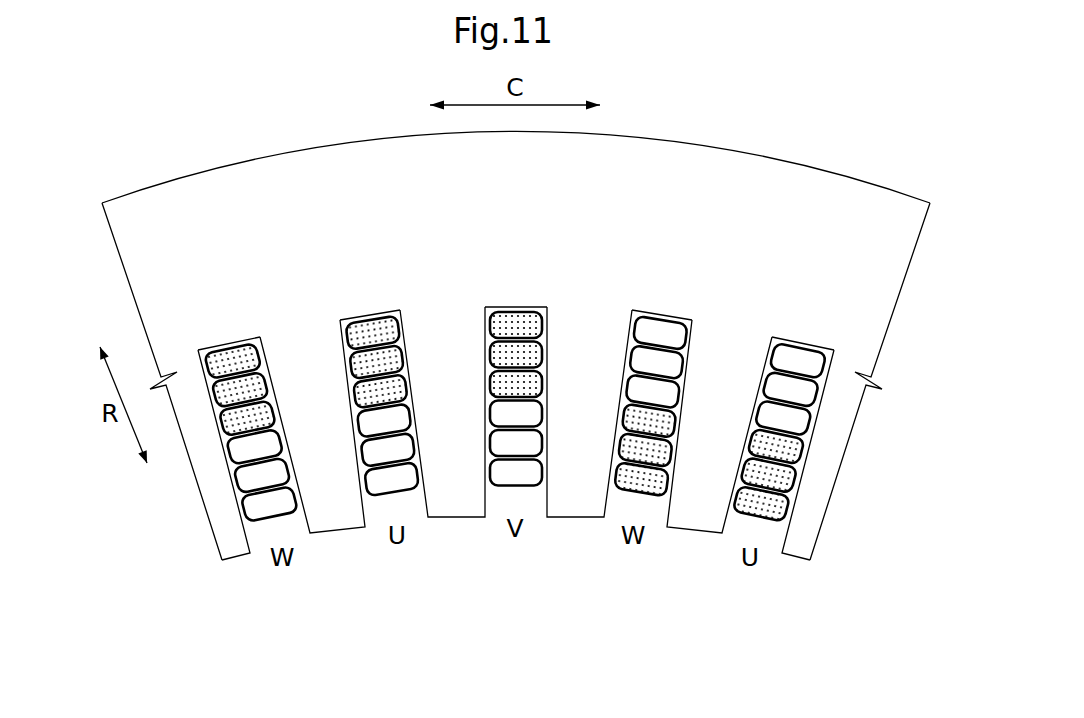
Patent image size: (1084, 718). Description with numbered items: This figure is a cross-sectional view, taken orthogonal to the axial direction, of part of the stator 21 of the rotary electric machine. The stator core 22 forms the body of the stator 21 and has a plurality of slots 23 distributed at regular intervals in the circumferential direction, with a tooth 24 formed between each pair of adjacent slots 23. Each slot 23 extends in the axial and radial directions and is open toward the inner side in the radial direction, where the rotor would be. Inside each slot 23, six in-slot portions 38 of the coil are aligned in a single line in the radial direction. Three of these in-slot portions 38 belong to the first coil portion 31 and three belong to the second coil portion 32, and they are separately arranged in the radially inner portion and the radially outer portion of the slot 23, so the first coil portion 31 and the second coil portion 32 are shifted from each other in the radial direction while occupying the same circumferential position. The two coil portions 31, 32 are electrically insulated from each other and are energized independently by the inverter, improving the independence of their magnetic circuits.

The stator 21 is at (216, 91).
The stator core 22 is at (752, 167).
The slot 23 is at (365, 512).
The tooth 24 is at (343, 522).
The in-slot portion 38 is at (573, 390).
The first coil portion 31 is at (398, 388).
The second coil portion 32 is at (370, 480).